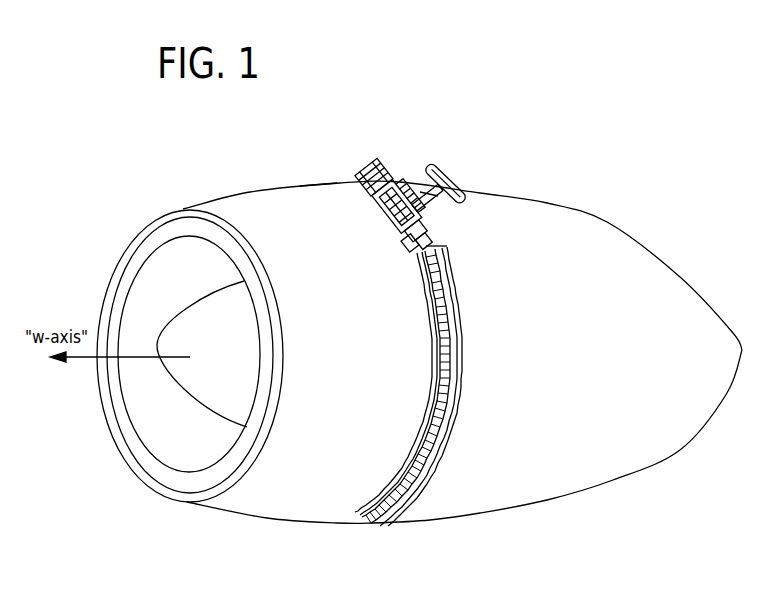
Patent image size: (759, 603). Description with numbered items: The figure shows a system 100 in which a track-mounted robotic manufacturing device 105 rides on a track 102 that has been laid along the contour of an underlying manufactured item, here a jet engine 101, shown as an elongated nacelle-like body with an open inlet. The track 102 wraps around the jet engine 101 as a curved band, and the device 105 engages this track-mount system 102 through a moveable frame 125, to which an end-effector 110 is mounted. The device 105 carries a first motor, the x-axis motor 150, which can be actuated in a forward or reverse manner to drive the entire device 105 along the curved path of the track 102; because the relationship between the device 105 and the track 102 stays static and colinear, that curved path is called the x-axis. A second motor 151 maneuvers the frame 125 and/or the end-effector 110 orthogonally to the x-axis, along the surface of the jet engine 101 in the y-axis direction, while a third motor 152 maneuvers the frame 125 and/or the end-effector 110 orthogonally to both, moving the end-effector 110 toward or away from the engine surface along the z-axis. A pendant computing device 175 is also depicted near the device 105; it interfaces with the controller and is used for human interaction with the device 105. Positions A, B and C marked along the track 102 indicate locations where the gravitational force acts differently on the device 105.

The system 100 is at (180, 178).
The jet engine 101 is at (608, 222).
The track 102 is at (465, 308).
The track-mounted robotic manufacturing device 105 is at (337, 192).
The end-effector 110 is at (380, 213).
The moveable frame 125 is at (410, 187).
The x-axis motor 150 is at (410, 171).
The second motor 151 is at (443, 252).
The third motor 152 is at (445, 213).
The pendant computing device 175 is at (453, 182).